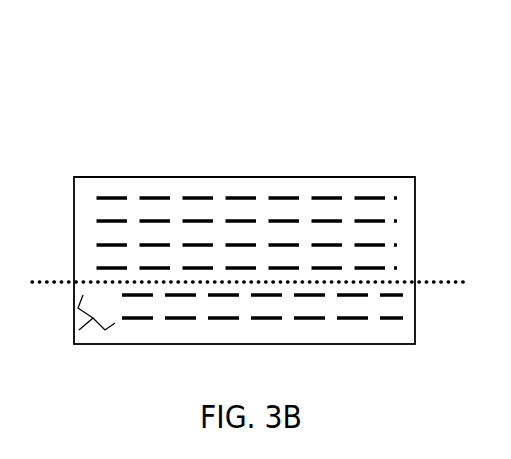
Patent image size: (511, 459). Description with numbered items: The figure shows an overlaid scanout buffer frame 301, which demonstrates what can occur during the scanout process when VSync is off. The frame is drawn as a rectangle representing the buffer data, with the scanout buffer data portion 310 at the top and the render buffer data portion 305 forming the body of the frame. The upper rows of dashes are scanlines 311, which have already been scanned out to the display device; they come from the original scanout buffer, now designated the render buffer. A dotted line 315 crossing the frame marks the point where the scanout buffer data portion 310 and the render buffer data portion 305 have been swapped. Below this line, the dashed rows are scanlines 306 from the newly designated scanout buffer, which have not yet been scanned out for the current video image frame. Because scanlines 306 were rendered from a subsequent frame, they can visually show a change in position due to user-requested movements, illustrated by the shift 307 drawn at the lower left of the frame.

The overlaid scanout buffer frame 301 is at (258, 63).
The render buffer data portion 305 is at (323, 350).
The scanlines 306 is at (188, 320).
The shift 307 is at (77, 343).
The scanout buffer data portion 310 is at (390, 177).
The scanlines 311 is at (207, 193).
The dotted line 315 is at (429, 284).